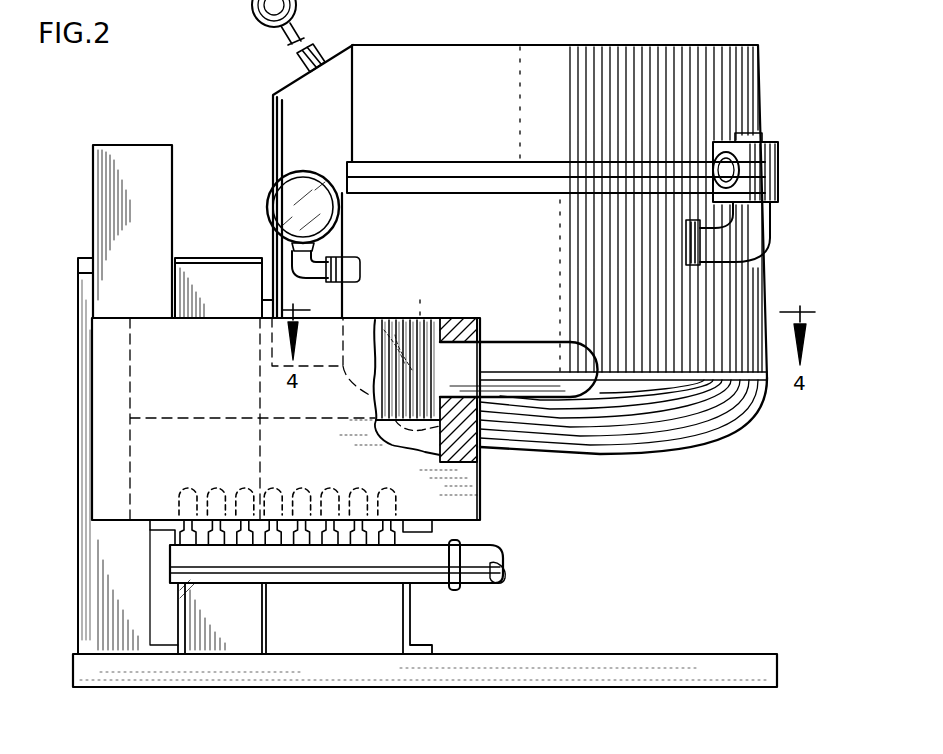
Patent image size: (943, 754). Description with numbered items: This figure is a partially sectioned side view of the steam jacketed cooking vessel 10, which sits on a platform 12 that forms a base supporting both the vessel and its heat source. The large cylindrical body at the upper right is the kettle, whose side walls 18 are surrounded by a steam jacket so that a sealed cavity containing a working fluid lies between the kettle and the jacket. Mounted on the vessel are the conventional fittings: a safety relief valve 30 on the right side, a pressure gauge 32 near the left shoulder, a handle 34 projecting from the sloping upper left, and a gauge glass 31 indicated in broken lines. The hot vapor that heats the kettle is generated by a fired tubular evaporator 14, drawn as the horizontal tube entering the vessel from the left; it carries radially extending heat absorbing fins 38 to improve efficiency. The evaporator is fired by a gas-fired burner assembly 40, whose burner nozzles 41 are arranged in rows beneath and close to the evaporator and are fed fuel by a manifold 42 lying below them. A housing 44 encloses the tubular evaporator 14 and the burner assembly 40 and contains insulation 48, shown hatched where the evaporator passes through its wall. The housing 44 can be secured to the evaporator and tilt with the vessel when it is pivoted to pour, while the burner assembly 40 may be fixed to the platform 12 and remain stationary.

The steam jacketed cooking vessel 10 is at (556, 227).
The platform 12 is at (576, 668).
The tubular evaporator 14 is at (566, 336).
The side walls 18 is at (642, 64).
The safety relief valve 30 is at (770, 152).
The gauge glass 31 is at (383, 315).
The pressure gauge 32 is at (287, 203).
The handle 34 is at (296, 26).
The heat absorbing fins 38 is at (405, 423).
The burner assembly 40 is at (354, 541).
The burner nozzles 41 is at (188, 489).
The manifold 42 is at (330, 566).
The housing 44 is at (103, 441).
The insulation 48 is at (455, 322).